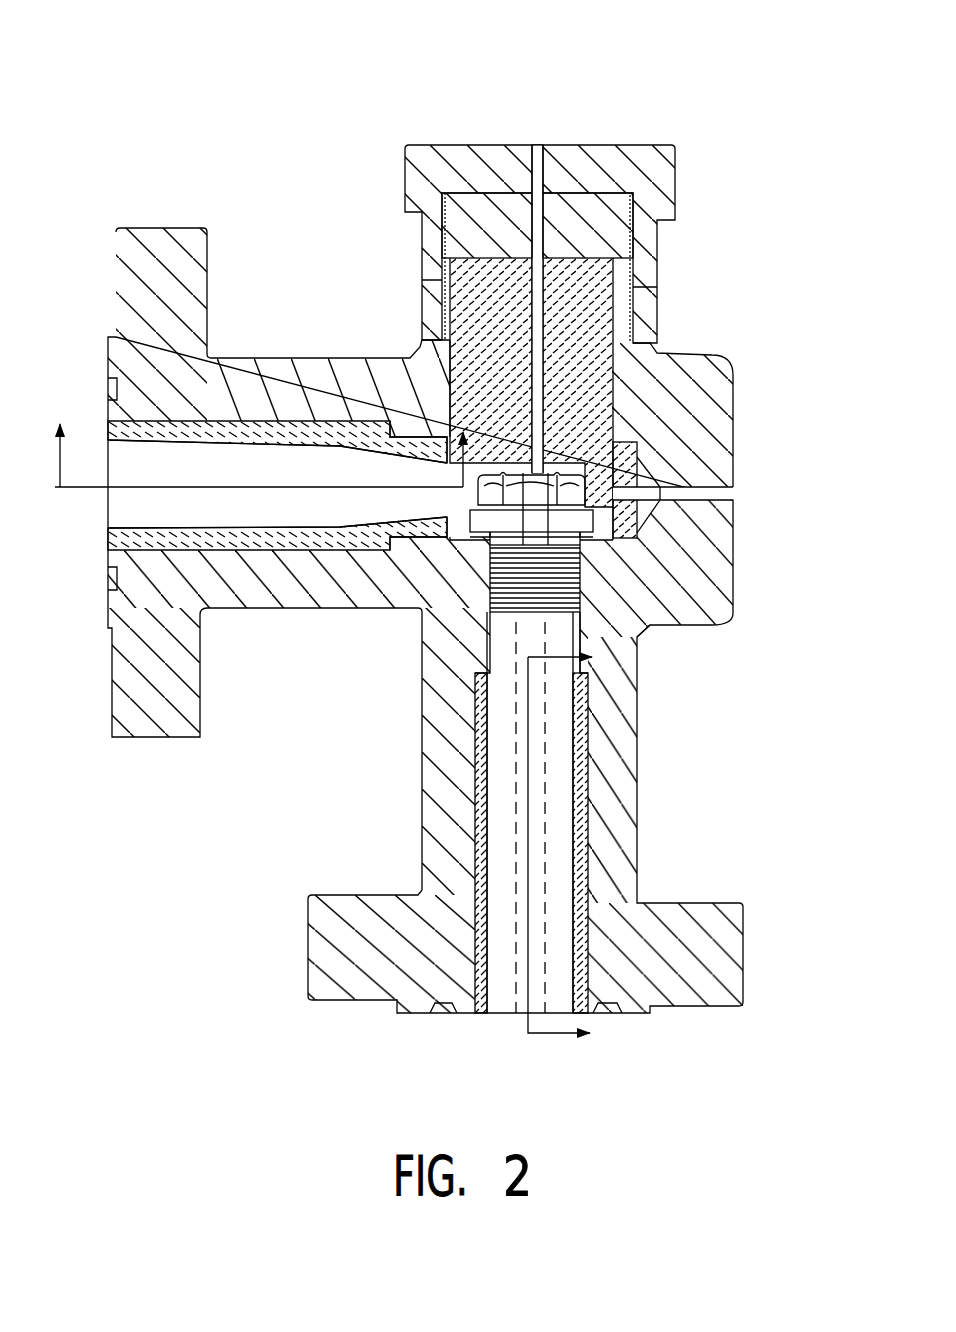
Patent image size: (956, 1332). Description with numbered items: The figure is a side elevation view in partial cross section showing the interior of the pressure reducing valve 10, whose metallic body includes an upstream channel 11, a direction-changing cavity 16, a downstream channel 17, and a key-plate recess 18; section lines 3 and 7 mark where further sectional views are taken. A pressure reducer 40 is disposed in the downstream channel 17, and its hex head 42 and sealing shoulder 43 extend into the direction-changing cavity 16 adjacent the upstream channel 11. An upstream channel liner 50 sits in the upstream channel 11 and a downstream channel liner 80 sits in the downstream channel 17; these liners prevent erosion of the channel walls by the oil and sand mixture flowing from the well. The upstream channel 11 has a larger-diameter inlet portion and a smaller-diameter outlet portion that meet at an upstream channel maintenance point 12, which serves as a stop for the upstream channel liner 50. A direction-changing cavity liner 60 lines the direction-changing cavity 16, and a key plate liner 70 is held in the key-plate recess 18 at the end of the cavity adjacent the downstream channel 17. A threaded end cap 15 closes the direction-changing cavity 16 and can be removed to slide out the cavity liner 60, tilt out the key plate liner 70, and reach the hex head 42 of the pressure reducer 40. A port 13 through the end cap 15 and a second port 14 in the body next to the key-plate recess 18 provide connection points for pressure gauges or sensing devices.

The pressure reducing valve 10 is at (782, 68).
The upstream channel 11 is at (162, 508).
The upstream channel maintenance point 12 is at (398, 428).
The port 13 is at (543, 142).
The second port 14 is at (746, 493).
The end cap 15 is at (680, 187).
The direction-changing cavity 16 is at (534, 470).
The downstream channel 17 is at (581, 623).
The key-plate recess 18 is at (655, 512).
The pressure reducer 40 is at (507, 631).
The hex head 42 is at (558, 490).
The sealing shoulder 43 is at (468, 523).
The upstream channel liner 50 is at (182, 555).
The direction-changing cavity liner 60 is at (565, 330).
The key plate liner 70 is at (628, 468).
The downstream channel liner 80 is at (598, 752).
The section line 3- 3 is at (264, 437).
The section line 7- 7 is at (575, 849).